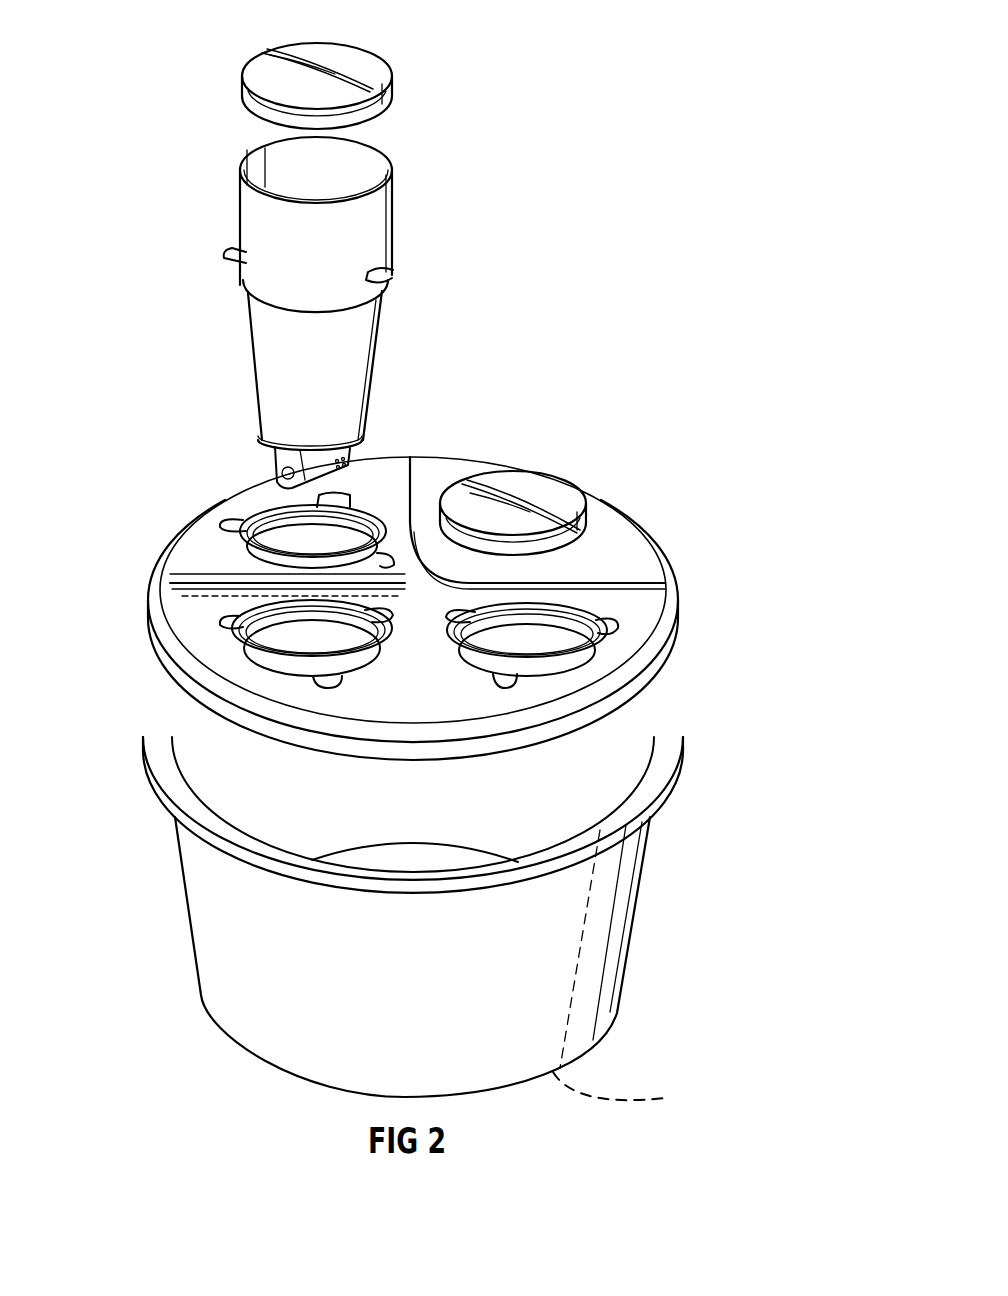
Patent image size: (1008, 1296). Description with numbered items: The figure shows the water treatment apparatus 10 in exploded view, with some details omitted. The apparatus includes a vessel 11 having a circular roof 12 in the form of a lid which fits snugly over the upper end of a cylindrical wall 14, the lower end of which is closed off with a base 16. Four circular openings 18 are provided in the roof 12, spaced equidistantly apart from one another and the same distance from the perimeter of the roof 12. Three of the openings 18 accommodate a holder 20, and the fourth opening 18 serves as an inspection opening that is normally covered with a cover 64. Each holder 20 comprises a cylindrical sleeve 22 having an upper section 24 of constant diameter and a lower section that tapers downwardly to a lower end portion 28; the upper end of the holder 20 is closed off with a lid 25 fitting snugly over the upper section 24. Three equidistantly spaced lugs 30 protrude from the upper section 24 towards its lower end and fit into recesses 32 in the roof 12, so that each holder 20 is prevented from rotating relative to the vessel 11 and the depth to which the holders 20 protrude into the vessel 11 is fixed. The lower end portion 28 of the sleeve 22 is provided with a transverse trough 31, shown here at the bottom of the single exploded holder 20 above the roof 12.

The water treatment apparatus 10 is at (776, 386).
The vessel 11 is at (672, 973).
The circular roof 12 is at (620, 532).
The cylindrical wall 14 is at (607, 877).
The base 16 is at (631, 1093).
The circular openings 18 is at (283, 549).
The holder 20 is at (458, 132).
The cylindrical sleeve 22 is at (340, 333).
The upper section 24 is at (367, 218).
The lid 25 is at (372, 62).
The lower end portion 28 is at (357, 434).
The lugs 30 is at (232, 252).
The transverse trough 31 is at (268, 461).
The recesses 32 is at (217, 621).
The cover 64 is at (543, 487).